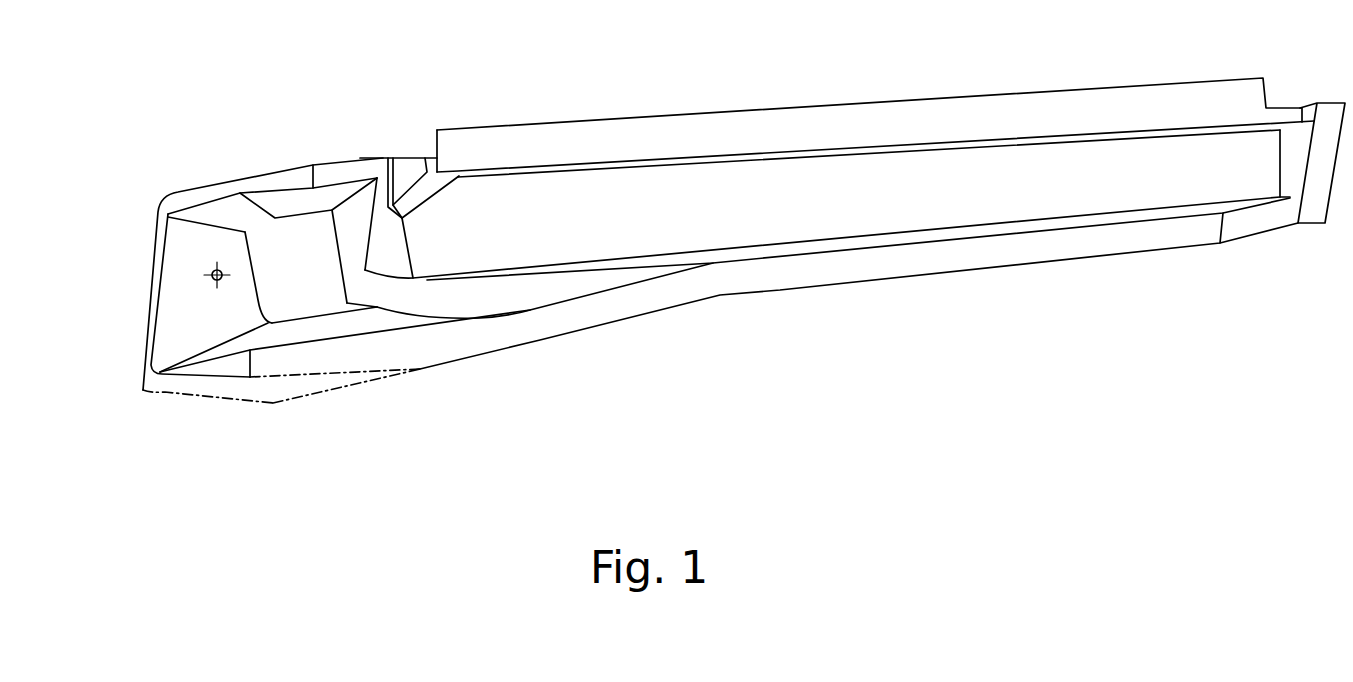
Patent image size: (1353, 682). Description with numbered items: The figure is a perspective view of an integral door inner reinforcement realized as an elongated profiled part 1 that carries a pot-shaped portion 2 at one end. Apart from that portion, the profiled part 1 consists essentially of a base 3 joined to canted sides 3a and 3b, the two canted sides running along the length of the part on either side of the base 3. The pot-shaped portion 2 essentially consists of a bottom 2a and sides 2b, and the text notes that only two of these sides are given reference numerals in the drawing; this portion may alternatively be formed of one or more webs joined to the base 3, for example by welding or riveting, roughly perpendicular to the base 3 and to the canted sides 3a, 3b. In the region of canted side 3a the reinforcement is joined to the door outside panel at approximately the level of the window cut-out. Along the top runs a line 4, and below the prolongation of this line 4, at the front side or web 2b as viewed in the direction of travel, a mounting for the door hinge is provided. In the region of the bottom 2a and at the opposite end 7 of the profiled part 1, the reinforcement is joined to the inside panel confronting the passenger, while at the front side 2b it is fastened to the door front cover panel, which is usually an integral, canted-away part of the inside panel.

The profiled part 1 is at (752, 94).
The pot-shaped portion 2 is at (386, 116).
The bottom 2a is at (317, 293).
The sides 2b is at (210, 215).
The base 3 is at (1023, 172).
The canted side 3a is at (587, 132).
The canted side 3b is at (815, 273).
The line 4 is at (905, 143).
The opposite end 7 is at (1345, 276).